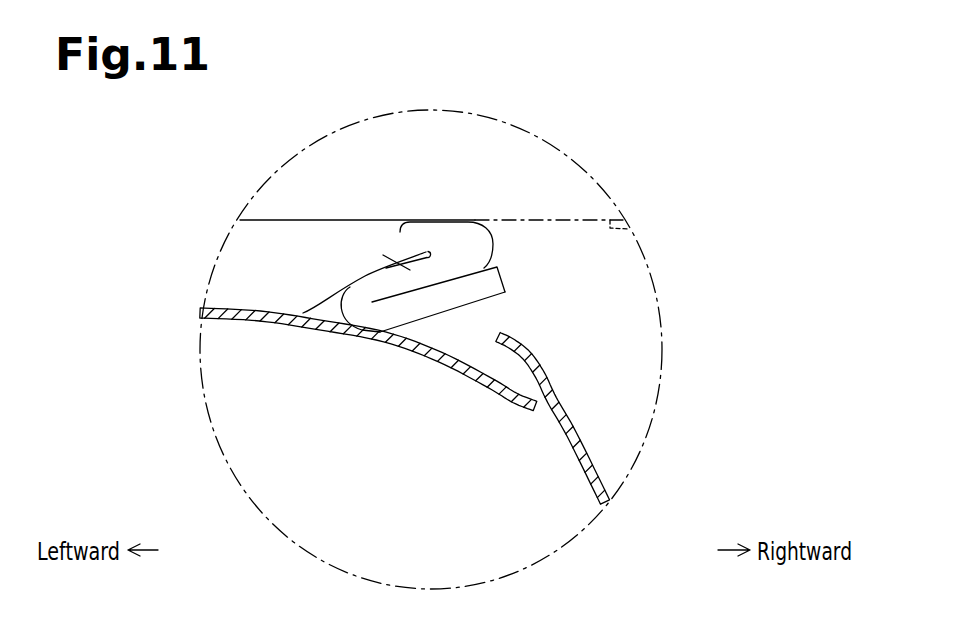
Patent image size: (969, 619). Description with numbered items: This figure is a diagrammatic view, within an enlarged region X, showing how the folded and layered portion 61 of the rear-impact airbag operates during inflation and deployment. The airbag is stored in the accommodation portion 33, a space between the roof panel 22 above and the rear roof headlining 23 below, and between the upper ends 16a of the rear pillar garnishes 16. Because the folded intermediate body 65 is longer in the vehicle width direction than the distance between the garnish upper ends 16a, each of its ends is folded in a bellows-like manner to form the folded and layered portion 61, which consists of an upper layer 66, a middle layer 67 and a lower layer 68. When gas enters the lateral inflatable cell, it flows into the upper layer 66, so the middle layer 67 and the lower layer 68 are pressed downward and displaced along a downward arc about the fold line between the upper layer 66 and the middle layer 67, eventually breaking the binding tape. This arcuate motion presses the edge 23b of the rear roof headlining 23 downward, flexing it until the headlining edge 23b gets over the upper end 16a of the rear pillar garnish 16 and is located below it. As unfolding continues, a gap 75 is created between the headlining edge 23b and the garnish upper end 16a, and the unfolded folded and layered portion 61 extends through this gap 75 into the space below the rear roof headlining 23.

The enlarged region X is at (651, 273).
The rear pillar garnish 16 is at (567, 418).
The upper end of rear pillar garnish 16a is at (522, 343).
The roof panel 22 is at (628, 224).
The rear roof headlining 23 is at (258, 321).
The edge of rear roof headlining 23b is at (505, 398).
The accommodation portion 33 is at (553, 277).
The folded and layered portion 61 is at (408, 184).
The folded intermediate body 65 is at (311, 225).
The upper layer 66 is at (448, 237).
The middle layer 67 is at (412, 297).
The lower layer 68 is at (453, 305).
The gap 75 is at (539, 396).